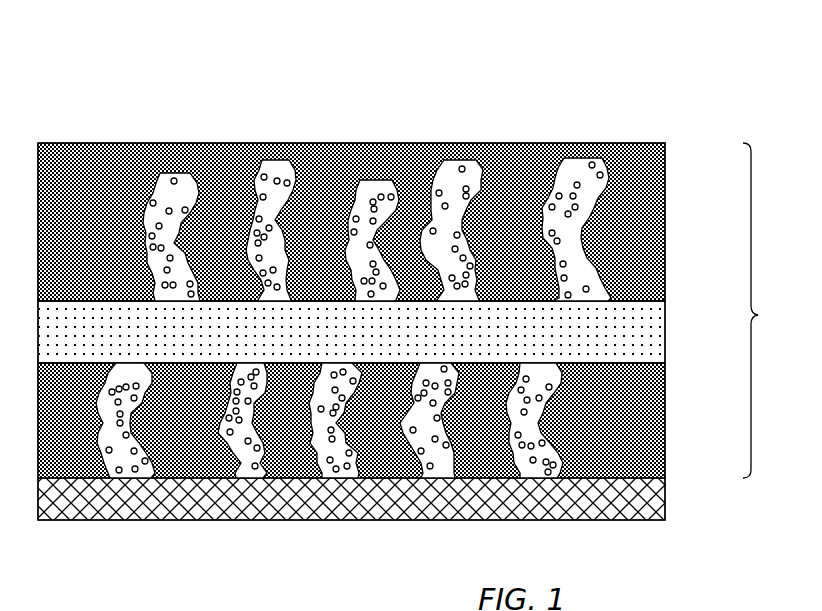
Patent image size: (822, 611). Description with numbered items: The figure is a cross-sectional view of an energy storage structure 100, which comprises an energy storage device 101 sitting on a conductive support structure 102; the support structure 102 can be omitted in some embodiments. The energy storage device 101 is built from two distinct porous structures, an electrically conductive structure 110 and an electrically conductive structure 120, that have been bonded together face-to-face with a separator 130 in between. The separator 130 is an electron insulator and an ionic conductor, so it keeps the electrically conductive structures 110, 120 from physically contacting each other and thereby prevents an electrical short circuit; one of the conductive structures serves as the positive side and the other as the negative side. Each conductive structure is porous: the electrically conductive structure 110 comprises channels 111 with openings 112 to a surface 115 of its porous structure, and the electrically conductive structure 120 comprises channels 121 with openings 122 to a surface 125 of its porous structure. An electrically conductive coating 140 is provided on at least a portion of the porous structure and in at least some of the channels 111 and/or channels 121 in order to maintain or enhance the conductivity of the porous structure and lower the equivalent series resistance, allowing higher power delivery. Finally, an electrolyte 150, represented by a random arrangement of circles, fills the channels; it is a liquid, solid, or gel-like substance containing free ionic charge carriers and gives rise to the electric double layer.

The energy storage structure 100 is at (645, 101).
The energy storage device 101 is at (778, 310).
The conductive support structure 102 is at (282, 487).
The electrically conductive structure 110 is at (351, 420).
The channels 111 is at (222, 415).
The openings 112 is at (421, 344).
The surface 115 is at (572, 364).
The electrically conductive structure 120 is at (351, 222).
The channels 121 is at (262, 152).
The openings 122 is at (164, 300).
The surface 125 is at (48, 288).
The separator 130 is at (632, 330).
The electrically conductive coating 140 is at (560, 180).
The electrolyte 150 is at (450, 150).